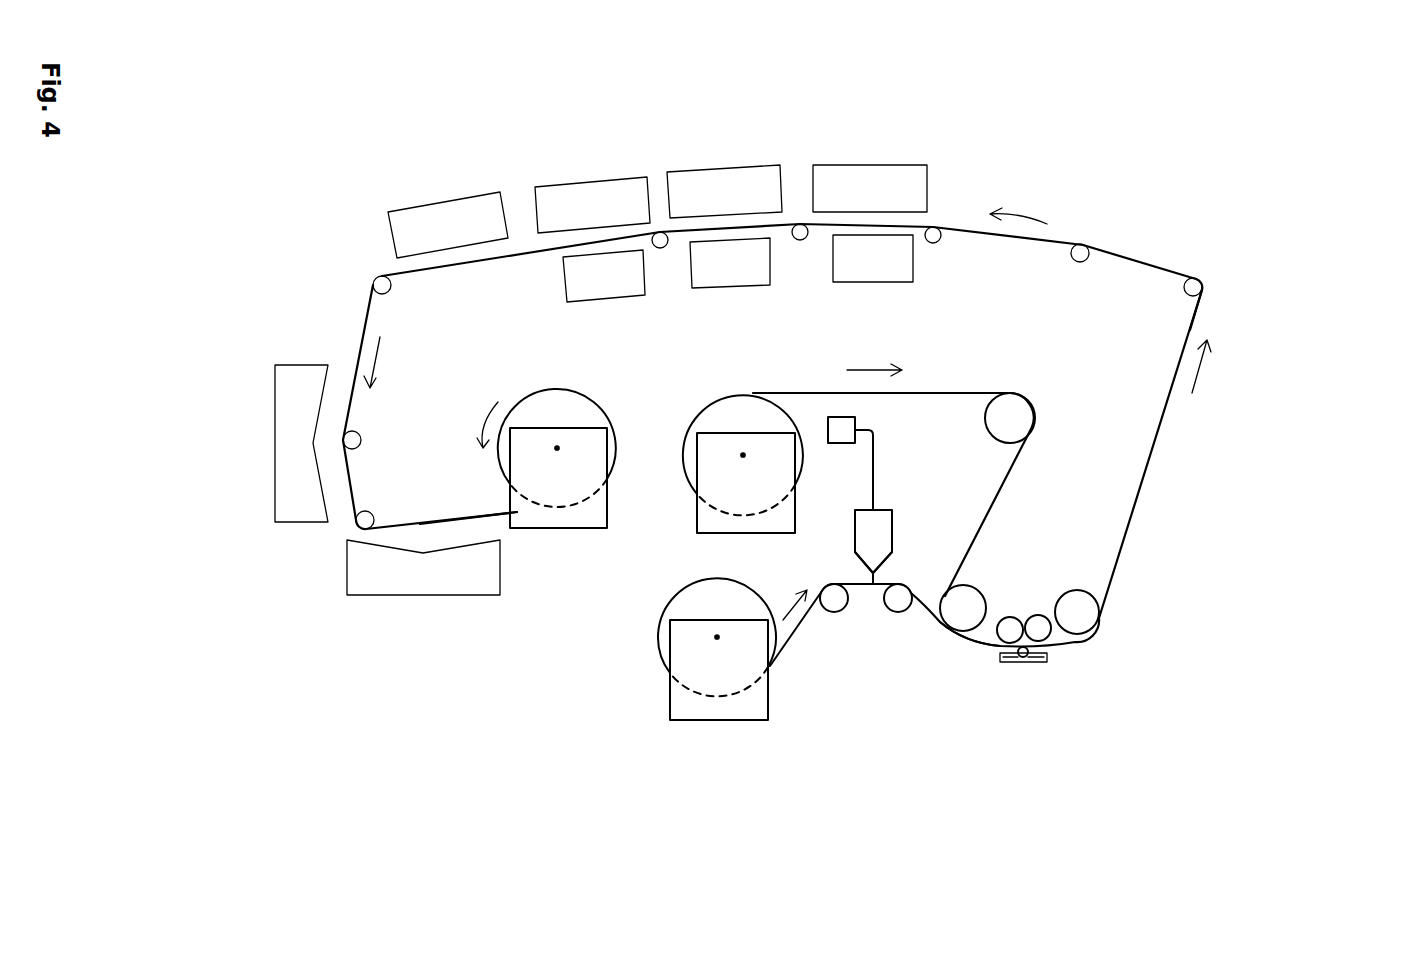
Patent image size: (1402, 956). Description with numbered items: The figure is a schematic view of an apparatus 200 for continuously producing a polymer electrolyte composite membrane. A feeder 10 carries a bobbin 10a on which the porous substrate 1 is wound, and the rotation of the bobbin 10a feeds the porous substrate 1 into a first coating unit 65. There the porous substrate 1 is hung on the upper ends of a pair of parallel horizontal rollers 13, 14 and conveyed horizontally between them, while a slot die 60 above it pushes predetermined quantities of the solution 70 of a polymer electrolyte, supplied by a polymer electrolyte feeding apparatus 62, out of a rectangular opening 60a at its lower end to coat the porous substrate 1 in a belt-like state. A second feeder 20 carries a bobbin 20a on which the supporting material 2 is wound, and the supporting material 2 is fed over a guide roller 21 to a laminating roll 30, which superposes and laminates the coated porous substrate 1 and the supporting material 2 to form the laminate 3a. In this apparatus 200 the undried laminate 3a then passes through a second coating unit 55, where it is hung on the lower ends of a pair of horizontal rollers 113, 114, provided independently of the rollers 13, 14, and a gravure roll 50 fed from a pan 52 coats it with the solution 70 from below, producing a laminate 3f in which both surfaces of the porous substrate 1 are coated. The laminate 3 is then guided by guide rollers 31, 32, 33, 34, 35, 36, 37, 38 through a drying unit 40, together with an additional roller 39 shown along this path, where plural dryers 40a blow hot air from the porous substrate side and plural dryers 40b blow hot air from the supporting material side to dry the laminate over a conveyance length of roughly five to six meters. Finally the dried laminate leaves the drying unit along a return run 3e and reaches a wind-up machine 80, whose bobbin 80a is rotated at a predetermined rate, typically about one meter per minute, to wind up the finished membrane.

The porous substrate 1 is at (787, 647).
The supporting material 2 is at (935, 393).
The laminate 3 is at (772, 435).
The laminate 3a is at (965, 645).
The belt return portion 3e is at (496, 516).
The laminate 3f is at (1197, 322).
The feeder 10 is at (717, 720).
The bobbin 10a is at (660, 650).
The horizontal roller 13 is at (834, 612).
The horizontal roller 14 is at (898, 612).
The feeder 20 is at (697, 518).
The bobbin 20a is at (695, 412).
The guide roller 21 is at (988, 427).
The laminating roll 30 is at (965, 585).
The guide roller 31 is at (1185, 292).
The guide roller 32 is at (1080, 262).
The guide roller 33 is at (934, 243).
The guide roller 34 is at (801, 240).
The guide roller 35 is at (661, 248).
The guide roller 36 is at (391, 287).
The guide roller 37 is at (361, 440).
The guide roller 38 is at (374, 518).
The roller 39 is at (1077, 590).
The drying unit 40 is at (341, 158).
The dryer 40a is at (465, 205).
The dryer 40b is at (603, 302).
The gravure roll 50 is at (1023, 658).
The pan 52 is at (1047, 660).
The second coating unit 55 is at (1108, 667).
The slot die 60 is at (892, 532).
The opening 60a is at (870, 575).
The polymerelectrolyte feeding apparatus 62 is at (850, 420).
The first coating unit 65 is at (898, 493).
The solution of a polymerelectrolyte 70 is at (877, 575).
The wind-up machine 80 is at (560, 528).
The bobbin 80a is at (513, 402).
The horizontal roller 113 is at (1010, 617).
The horizontal roller 114 is at (1038, 615).
The apparatus for continuously producing a polymerelectrolyte composite membrane 200 is at (1386, 753).